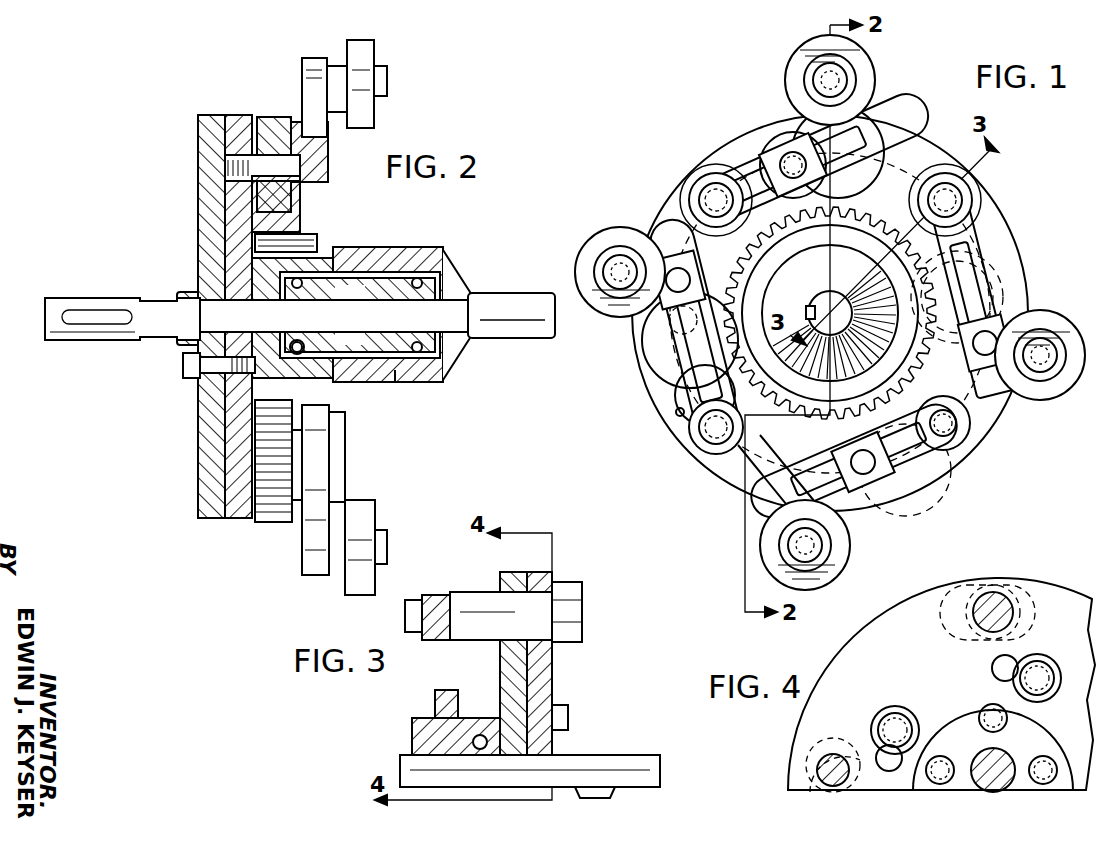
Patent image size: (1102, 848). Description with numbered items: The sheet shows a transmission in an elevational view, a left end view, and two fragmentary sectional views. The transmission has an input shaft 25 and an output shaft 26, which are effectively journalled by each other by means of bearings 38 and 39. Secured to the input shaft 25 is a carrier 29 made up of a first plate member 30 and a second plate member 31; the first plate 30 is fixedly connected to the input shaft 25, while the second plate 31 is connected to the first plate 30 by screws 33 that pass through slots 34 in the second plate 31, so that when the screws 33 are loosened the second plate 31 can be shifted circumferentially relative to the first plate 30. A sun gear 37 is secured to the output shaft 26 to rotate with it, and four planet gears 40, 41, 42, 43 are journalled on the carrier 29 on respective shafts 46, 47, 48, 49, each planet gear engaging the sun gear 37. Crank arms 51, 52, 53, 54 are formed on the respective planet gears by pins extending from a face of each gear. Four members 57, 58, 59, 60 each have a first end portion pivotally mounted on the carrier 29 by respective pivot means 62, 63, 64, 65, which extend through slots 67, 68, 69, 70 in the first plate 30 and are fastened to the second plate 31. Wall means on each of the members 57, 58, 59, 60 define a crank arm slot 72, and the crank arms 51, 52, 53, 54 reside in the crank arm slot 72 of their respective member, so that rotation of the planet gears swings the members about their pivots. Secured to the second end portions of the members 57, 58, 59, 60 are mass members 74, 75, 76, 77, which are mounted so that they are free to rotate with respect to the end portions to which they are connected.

In FIG. 2, the input shaft 25 is at (90, 300).
In FIG. 3, the input shaft 25 is at (600, 755).
In FIG. 4, the input shaft 25 is at (985, 755).
In FIG. 1, the output shaft 26 is at (838, 300).
In FIG. 2, the output shaft 26 is at (493, 295).
In FIG. 2, the carrier 29 is at (218, 115).
In FIG. 2, the first plate member 30 is at (238, 115).
In FIG. 3, the first plate member 30 is at (500, 660).
In FIG. 2, the second plate member 31 is at (198, 152).
In FIG. 3, the second plate member 31 is at (540, 672).
In FIG. 4, the screws 33 is at (882, 712).
In FIG. 4, the slots 34 is at (1000, 673).
In FIG. 1, the sun gear 37 is at (880, 232).
In FIG. 2, the sun gear 37 is at (300, 230).
In FIG. 2, the bearing 38 is at (300, 352).
In FIG. 2, the bearing 39 is at (400, 382).
In FIG. 1, the planet gear 40 is at (900, 135).
In FIG. 1, the planet gear 41 is at (1002, 286).
In FIG. 1, the planet gear 42 is at (765, 478).
In FIG. 2, the planet gear 42 is at (274, 520).
In FIG. 1, the planet gear 43 is at (645, 352).
In FIG. 1, the shaft 46 is at (884, 168).
In FIG. 1, the shaft 47 is at (1002, 294).
In FIG. 1, the shaft 48 is at (740, 478).
In FIG. 3, the shaft 48 is at (485, 595).
In FIG. 1, the shaft 49 is at (672, 320).
In FIG. 1, the crank arm 51 is at (780, 140).
In FIG. 1, the crank arm 52 is at (1000, 380).
In FIG. 1, the crank arm 53 is at (866, 490).
In FIG. 1, the crank arm 54 is at (692, 285).
In FIG. 1, the member 57 is at (762, 160).
In FIG. 2, the member 57 is at (305, 65).
In FIG. 1, the member 58 is at (990, 242).
In FIG. 3, the member 58 is at (432, 596).
In FIG. 1, the member 59 is at (890, 478).
In FIG. 2, the member 59 is at (330, 510).
In FIG. 1, the member 60 is at (678, 388).
In FIG. 1, the pivot means 62 is at (705, 190).
In FIG. 4, the pivot means 62 is at (825, 765).
In FIG. 1, the pivot means 63 is at (968, 188).
In FIG. 4, the pivot means 63 is at (1003, 600).
In FIG. 1, the pivot means 64 is at (972, 464).
In FIG. 1, the pivot means 65 is at (700, 435).
In FIG. 1, the slot 67 is at (690, 210).
In FIG. 4, the slot 67 is at (812, 735).
In FIG. 1, the slot 68 is at (982, 208).
In FIG. 4, the slot 68 is at (968, 590).
In FIG. 1, the slot 69 is at (930, 478).
In FIG. 1, the slot 70 is at (676, 412).
In FIG. 1, the crank arm slot 72 is at (735, 178).
In FIG. 1, the mass member 74 is at (877, 75).
In FIG. 1, the mass member 75 is at (1052, 390).
In FIG. 1, the mass member 76 is at (808, 592).
In FIG. 2, the mass member 76 is at (360, 515).
In FIG. 1, the mass member 77 is at (600, 240).